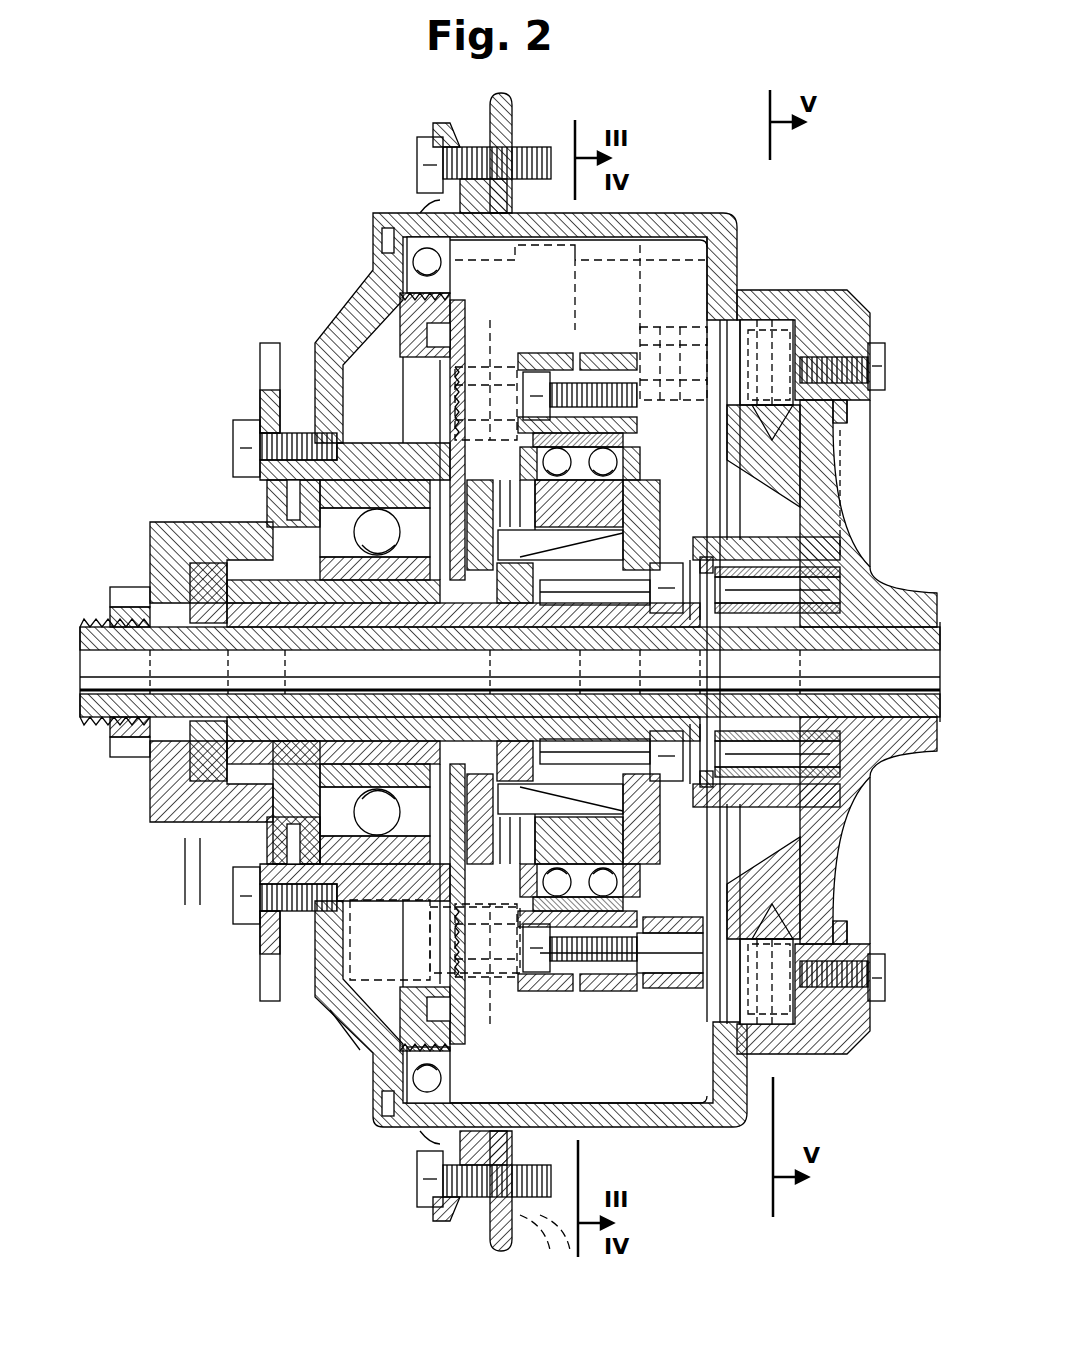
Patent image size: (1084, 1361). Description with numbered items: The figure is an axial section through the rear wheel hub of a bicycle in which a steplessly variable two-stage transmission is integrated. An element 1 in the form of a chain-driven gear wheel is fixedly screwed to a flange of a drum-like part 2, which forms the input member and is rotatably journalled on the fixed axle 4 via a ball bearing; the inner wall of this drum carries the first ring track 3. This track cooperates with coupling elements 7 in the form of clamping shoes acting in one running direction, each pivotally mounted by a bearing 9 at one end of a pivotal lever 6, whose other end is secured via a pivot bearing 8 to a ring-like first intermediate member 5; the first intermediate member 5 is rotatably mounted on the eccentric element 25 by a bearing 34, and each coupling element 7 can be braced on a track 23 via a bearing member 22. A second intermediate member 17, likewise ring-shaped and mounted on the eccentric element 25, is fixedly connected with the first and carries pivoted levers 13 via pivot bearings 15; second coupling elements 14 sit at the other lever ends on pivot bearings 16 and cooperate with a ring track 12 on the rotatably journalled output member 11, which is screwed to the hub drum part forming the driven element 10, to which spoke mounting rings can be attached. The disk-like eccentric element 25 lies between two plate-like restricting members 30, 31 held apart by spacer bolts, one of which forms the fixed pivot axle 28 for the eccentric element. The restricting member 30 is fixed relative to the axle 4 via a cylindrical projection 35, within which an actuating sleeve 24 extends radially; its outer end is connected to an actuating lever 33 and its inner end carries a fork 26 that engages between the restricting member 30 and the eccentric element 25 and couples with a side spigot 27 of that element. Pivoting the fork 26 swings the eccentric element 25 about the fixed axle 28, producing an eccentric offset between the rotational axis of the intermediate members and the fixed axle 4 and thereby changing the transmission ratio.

The element 1 is at (262, 400).
The drum-like part 2 is at (350, 333).
The first ring track 3 is at (372, 343).
The fixed axle 4 is at (118, 728).
The first intermediate member 5 is at (547, 353).
The pivotal lever 6 is at (470, 440).
The coupling element 7 is at (368, 1022).
The pivot bearing 8 is at (490, 385).
The bearing 9 is at (340, 1005).
The driven element 10 is at (740, 292).
The output member 11 is at (820, 440).
The ring track 12 is at (835, 470).
The pivoted lever 13 is at (655, 330).
The second coupling element 14 is at (837, 422).
The pivot bearing 15 is at (663, 985).
The pivot bearing 16 is at (690, 330).
The second intermediate member 17 is at (613, 353).
The bearing member 22 is at (770, 307).
The track 23 is at (742, 313).
The actuating sleeve 24 is at (240, 900).
The eccentric element 25 is at (650, 800).
The fork 26 is at (545, 553).
The side spigot 27 is at (513, 530).
The fixed pivot axle 28 is at (625, 872).
The restricting member 30 is at (437, 445).
The restricting member 31 is at (640, 503).
The actuating lever 33 is at (200, 850).
The bearing 34 is at (617, 458).
The cylindrical projection 35 is at (273, 523).